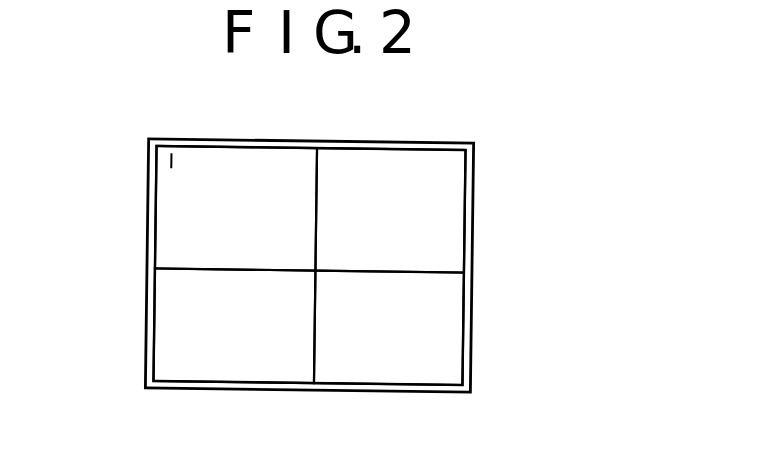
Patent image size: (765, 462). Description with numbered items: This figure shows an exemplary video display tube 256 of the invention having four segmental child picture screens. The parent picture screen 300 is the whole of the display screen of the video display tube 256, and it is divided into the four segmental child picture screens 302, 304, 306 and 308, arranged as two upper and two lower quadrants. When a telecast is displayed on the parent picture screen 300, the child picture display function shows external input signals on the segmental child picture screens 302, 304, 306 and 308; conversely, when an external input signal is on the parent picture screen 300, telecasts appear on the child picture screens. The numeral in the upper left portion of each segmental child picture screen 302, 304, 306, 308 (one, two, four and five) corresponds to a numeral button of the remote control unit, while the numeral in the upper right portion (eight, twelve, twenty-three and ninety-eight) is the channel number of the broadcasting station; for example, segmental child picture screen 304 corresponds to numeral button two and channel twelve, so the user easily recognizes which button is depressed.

The video display tube 256 is at (494, 137).
The parent picture screen 300 is at (482, 257).
The segmental child picture screen 302 is at (232, 157).
The segmental child picture screen 304 is at (388, 160).
The segmental child picture screen 306 is at (167, 335).
The segmental child picture screen 308 is at (450, 340).